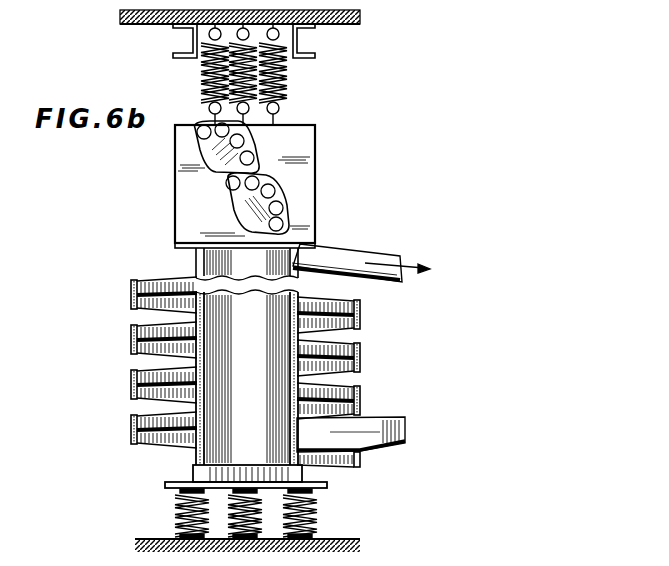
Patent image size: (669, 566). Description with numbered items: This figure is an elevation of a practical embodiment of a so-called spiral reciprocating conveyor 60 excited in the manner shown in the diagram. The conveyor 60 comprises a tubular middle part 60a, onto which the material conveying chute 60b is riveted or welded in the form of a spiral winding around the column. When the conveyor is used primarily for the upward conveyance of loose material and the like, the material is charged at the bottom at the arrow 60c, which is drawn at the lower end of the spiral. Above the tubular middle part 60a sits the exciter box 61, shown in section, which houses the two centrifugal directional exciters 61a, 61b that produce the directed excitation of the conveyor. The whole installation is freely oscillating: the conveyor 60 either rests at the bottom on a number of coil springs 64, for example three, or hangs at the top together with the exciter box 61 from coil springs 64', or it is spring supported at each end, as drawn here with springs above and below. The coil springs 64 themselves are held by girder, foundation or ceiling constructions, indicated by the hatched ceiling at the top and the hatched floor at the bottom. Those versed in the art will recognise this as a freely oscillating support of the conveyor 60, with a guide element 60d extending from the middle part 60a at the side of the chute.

The coil springs 64' is at (247, 74).
The exciter box 61 is at (180, 151).
The centrifugal directional exciter 61a is at (250, 148).
The centrifugal directional exciter 61b is at (238, 207).
The tubular middle part 60a is at (203, 288).
The blade / arm 60d is at (392, 262).
The spiral reciprocating conveyor 60 is at (340, 358).
The material conveying chute 60b is at (140, 369).
The arrow 60c is at (378, 431).
The coil springs 64 is at (247, 513).